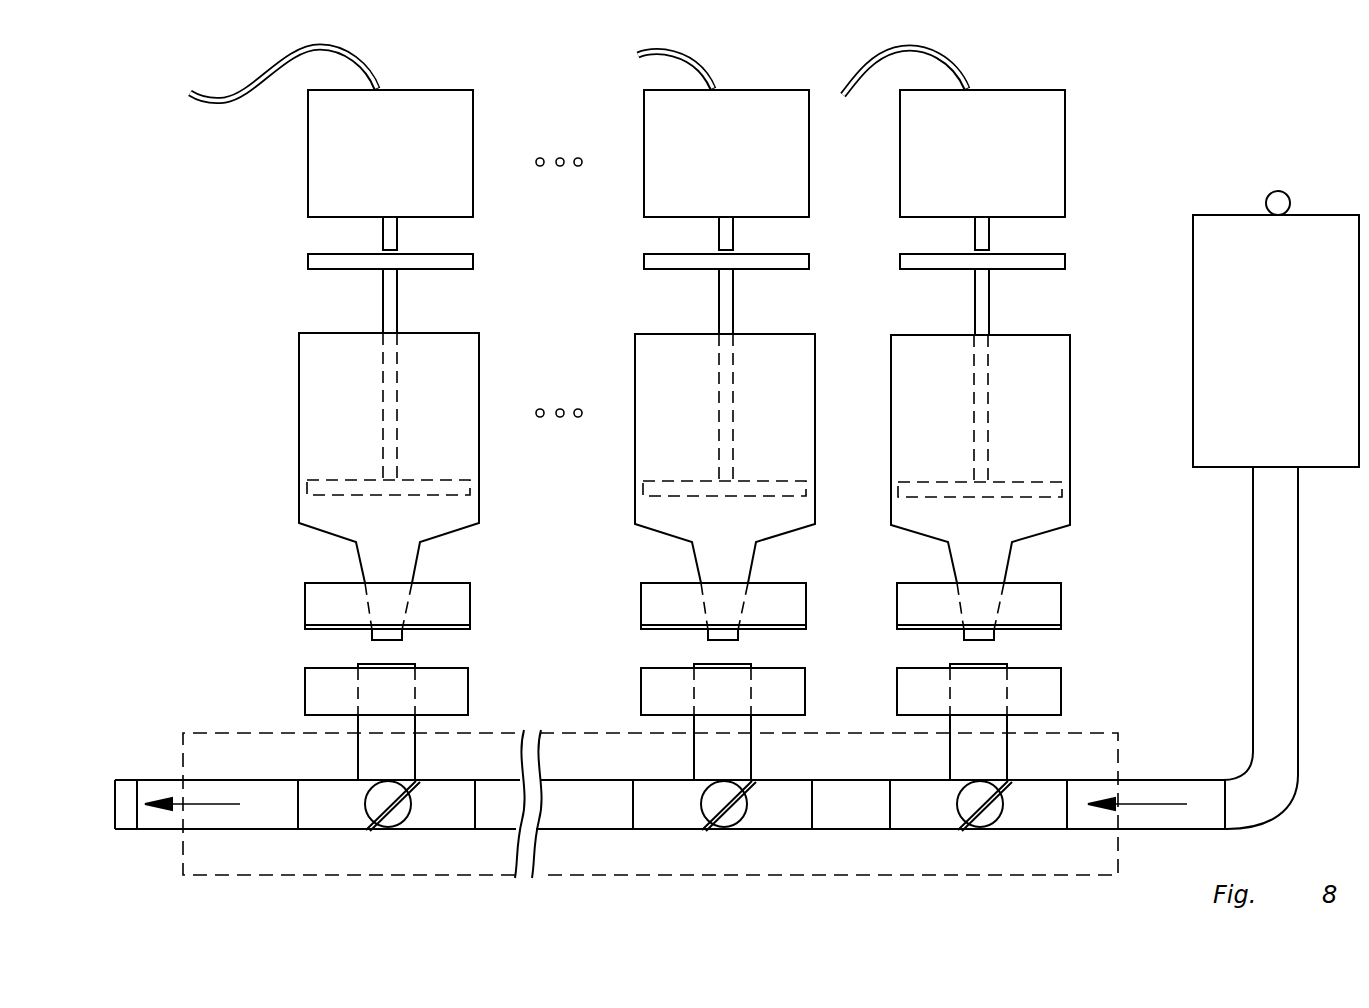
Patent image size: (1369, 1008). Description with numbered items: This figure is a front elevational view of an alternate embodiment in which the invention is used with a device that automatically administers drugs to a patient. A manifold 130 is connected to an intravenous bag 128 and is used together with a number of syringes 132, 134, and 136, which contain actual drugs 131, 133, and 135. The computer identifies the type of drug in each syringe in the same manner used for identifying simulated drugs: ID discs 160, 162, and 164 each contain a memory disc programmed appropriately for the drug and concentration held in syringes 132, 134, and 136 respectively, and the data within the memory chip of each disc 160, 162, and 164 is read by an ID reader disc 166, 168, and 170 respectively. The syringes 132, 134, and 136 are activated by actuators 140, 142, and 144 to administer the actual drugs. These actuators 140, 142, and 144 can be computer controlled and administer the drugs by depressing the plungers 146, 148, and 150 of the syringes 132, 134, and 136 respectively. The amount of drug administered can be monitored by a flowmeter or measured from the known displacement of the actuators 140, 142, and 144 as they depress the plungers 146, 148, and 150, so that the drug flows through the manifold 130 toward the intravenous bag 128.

The intravenous bag 128 is at (1310, 353).
The manifold conduit assembly 130 is at (182, 858).
The actual drug 131 is at (995, 575).
The syringe 132 is at (1070, 430).
The actual drug 133 is at (734, 578).
The syringe 134 is at (815, 428).
The actual drug 135 is at (398, 578).
The syringe 136 is at (479, 428).
The actuator 140 is at (1027, 150).
The actuator 142 is at (772, 150).
The actuator 144 is at (437, 148).
The plunger 146 is at (1065, 262).
The plunger 148 is at (809, 262).
The plunger 150 is at (473, 262).
The ID disc 160 is at (1062, 608).
The ID disc 162 is at (806, 608).
The ID disc 164 is at (470, 608).
The ID reader disc 166 is at (1062, 695).
The ID reader disc 168 is at (806, 695).
The ID reader disc 170 is at (468, 692).